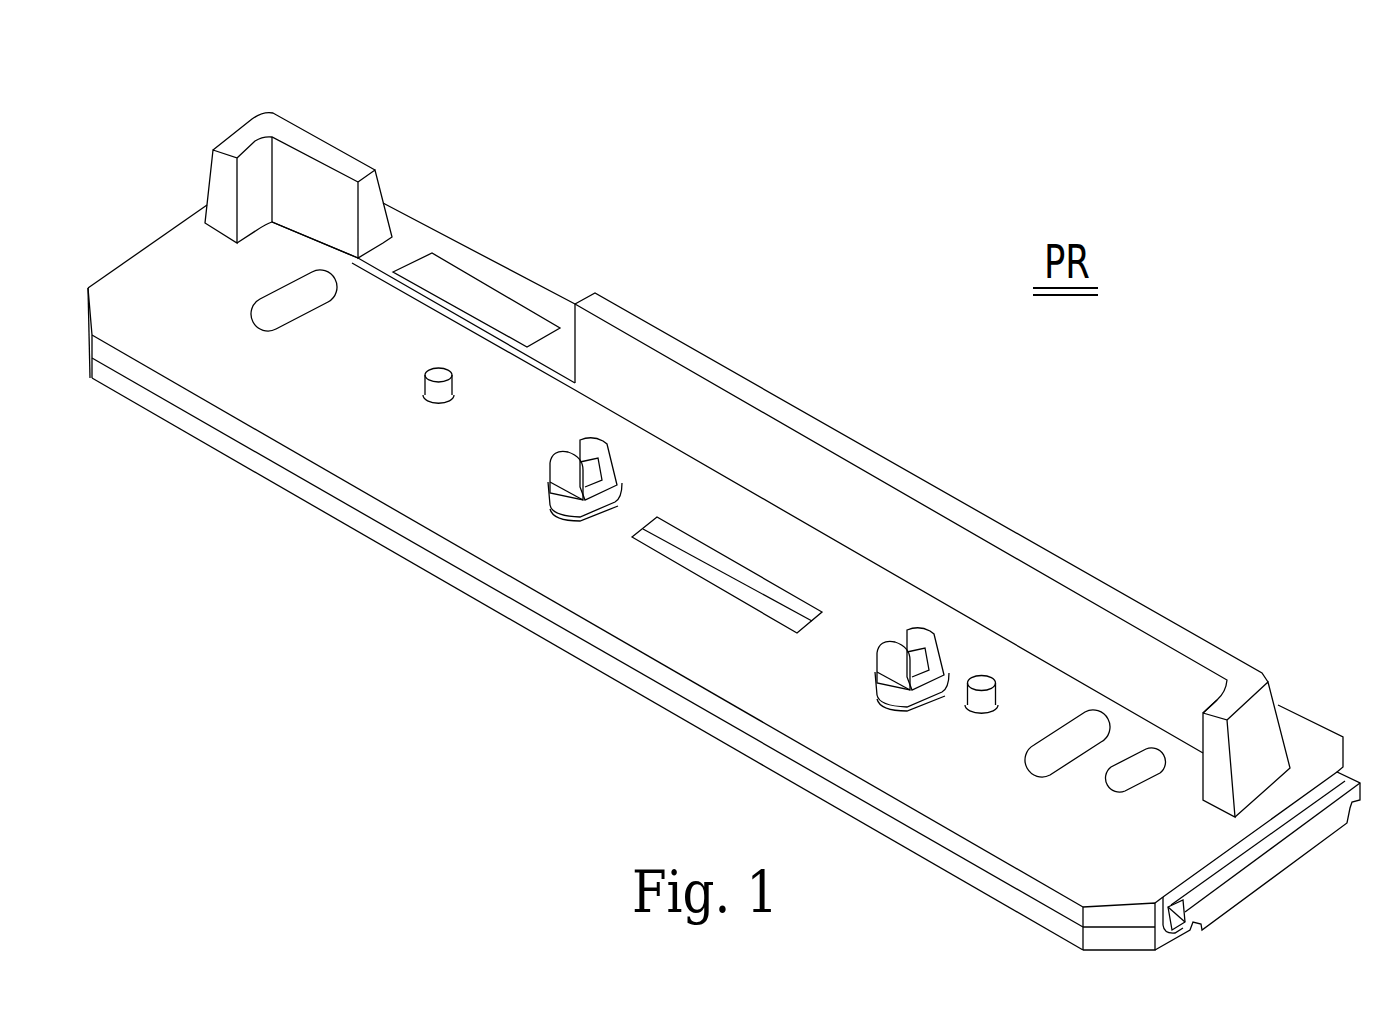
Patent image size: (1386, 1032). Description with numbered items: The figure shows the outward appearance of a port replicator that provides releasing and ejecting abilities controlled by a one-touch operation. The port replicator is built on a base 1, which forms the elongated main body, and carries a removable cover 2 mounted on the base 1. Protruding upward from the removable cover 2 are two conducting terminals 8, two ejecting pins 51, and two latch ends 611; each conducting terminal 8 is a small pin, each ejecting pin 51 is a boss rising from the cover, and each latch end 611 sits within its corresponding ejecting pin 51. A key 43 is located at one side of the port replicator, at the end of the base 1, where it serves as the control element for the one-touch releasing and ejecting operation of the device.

The base 1 is at (508, 607).
The removable cover 2 is at (1315, 740).
The conducting terminal 8 is at (440, 373).
The key 43 is at (1302, 848).
The ejecting pin 51 is at (610, 452).
The latch end 611 is at (590, 463).